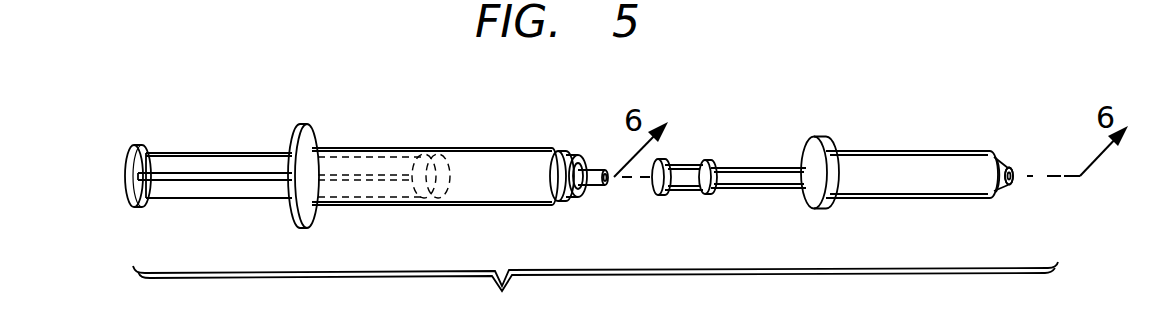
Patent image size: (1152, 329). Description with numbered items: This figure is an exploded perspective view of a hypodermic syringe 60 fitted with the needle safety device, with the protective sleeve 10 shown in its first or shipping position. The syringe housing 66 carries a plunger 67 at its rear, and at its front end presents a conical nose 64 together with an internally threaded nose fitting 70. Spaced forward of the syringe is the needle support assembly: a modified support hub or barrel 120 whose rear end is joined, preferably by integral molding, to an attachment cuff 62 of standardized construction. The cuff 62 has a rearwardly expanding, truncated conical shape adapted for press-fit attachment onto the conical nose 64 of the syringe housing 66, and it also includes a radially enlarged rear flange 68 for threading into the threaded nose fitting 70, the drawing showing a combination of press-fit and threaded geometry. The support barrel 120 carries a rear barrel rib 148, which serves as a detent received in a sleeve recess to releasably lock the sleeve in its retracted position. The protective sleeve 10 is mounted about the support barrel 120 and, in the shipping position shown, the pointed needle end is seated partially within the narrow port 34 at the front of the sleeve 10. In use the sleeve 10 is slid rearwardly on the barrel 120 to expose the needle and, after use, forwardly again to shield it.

The protective sleeve 10 is at (908, 163).
The narrow port 34 is at (1013, 178).
The hypodermic syringe 60 is at (483, 112).
The attachment cuff 62 is at (683, 165).
The conical nose 64 is at (597, 190).
The syringe housing 66 is at (497, 196).
The plunger 67 is at (208, 160).
The rear flange 68 is at (662, 195).
The nose fitting 70 is at (568, 152).
The support barrel 120 is at (780, 188).
The rear barrel rib 148 is at (700, 177).